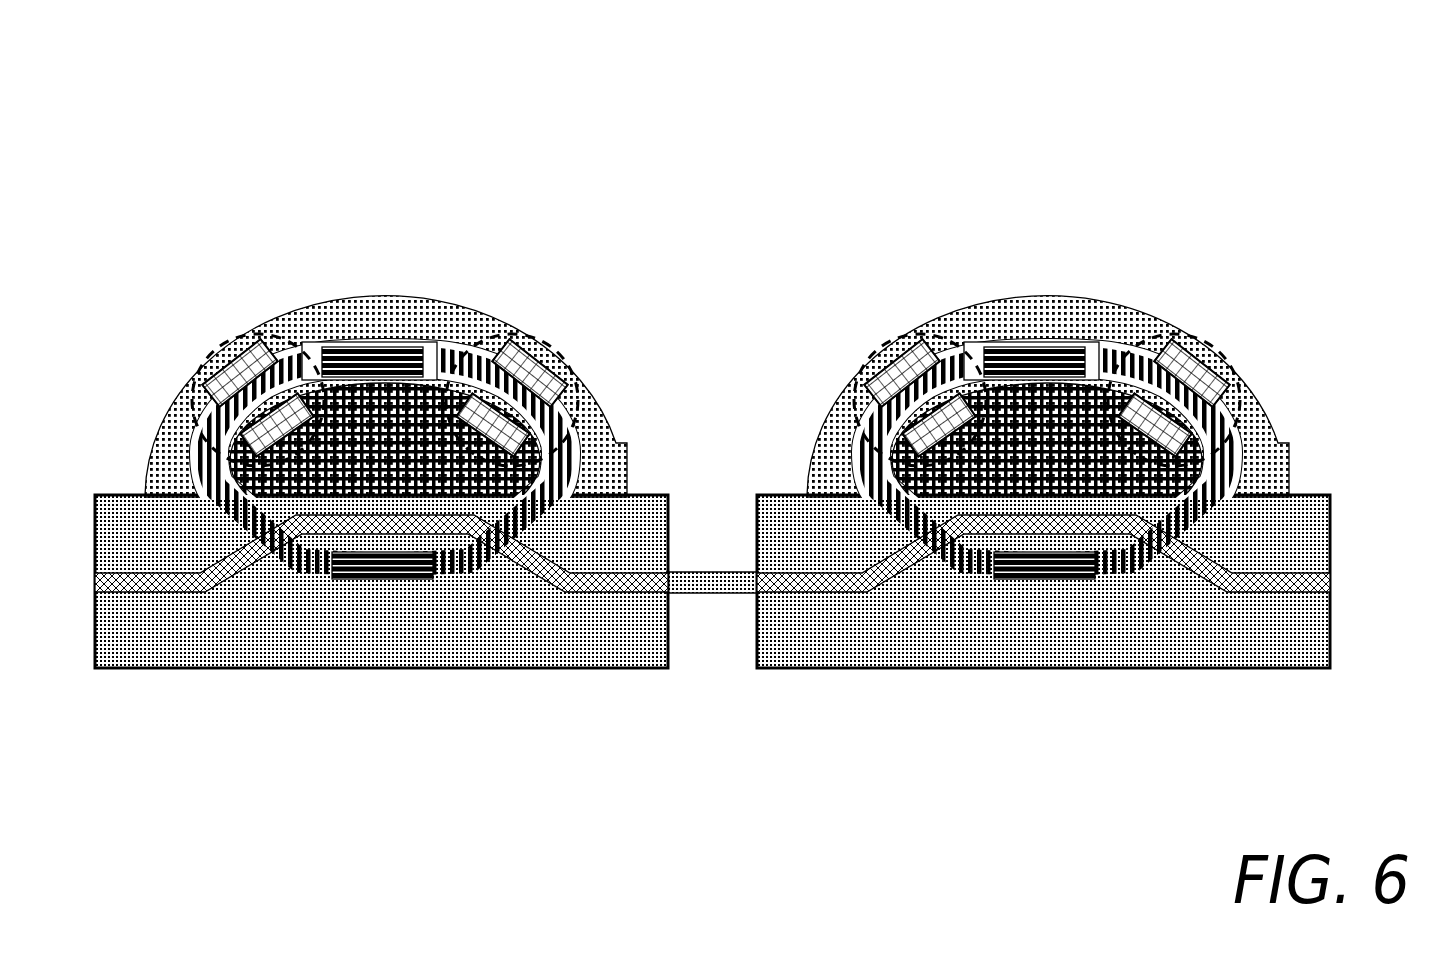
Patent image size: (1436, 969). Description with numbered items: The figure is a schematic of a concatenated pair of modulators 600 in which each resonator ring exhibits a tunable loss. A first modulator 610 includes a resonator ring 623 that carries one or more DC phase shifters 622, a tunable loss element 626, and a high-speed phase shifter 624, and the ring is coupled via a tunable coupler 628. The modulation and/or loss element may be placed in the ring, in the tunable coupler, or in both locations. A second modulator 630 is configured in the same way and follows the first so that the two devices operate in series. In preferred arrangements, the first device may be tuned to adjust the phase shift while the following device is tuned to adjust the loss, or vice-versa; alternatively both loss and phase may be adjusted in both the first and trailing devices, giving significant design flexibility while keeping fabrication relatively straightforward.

The concatenated pair of modulators 600 is at (717, 394).
The first modulator 610 is at (214, 668).
The DC phase shifters 622 is at (385, 347).
The resonator ring 623 is at (574, 454).
The high-speed phase shifter 624 is at (232, 334).
The tunable loss element 626 is at (556, 347).
The tunable coupler 628 is at (232, 545).
The second modulator 630 is at (860, 668).